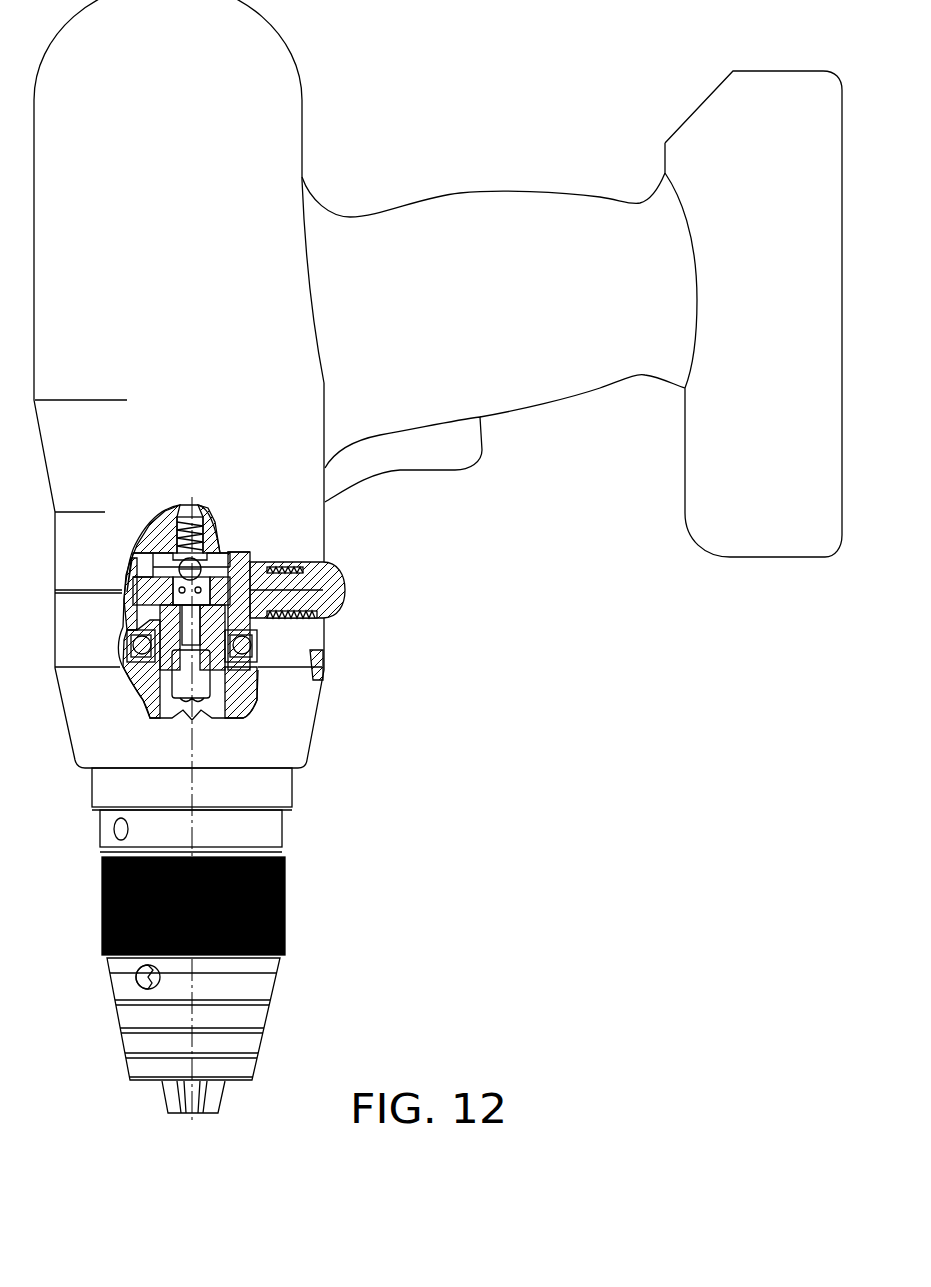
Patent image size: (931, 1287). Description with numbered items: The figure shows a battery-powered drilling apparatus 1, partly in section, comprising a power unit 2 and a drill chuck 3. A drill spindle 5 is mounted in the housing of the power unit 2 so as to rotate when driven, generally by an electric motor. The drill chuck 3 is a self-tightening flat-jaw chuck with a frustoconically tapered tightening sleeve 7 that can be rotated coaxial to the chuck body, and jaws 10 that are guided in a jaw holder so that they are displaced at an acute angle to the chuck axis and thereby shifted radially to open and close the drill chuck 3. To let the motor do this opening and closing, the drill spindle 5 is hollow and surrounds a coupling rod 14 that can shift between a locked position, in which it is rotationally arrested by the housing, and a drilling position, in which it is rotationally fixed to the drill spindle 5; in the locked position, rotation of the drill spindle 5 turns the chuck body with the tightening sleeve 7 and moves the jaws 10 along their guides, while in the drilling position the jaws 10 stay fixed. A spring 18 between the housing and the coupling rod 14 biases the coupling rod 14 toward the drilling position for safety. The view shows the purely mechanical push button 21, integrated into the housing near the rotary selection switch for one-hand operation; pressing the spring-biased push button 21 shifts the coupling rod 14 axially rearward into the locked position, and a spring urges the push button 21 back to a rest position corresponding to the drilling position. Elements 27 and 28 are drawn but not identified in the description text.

The drilling apparatus 1 is at (390, 175).
The power unit 2 is at (248, 168).
The drill chuck 3 is at (287, 928).
The drill spindle 5 is at (232, 707).
The tightening sleeve 7 is at (142, 1067).
The jaws 10 is at (172, 1093).
The coupling rod 14 is at (232, 680).
The spring 18 is at (213, 513).
The push button 21 is at (345, 590).
The spring 27 is at (222, 546).
The bearing 28 is at (257, 627).